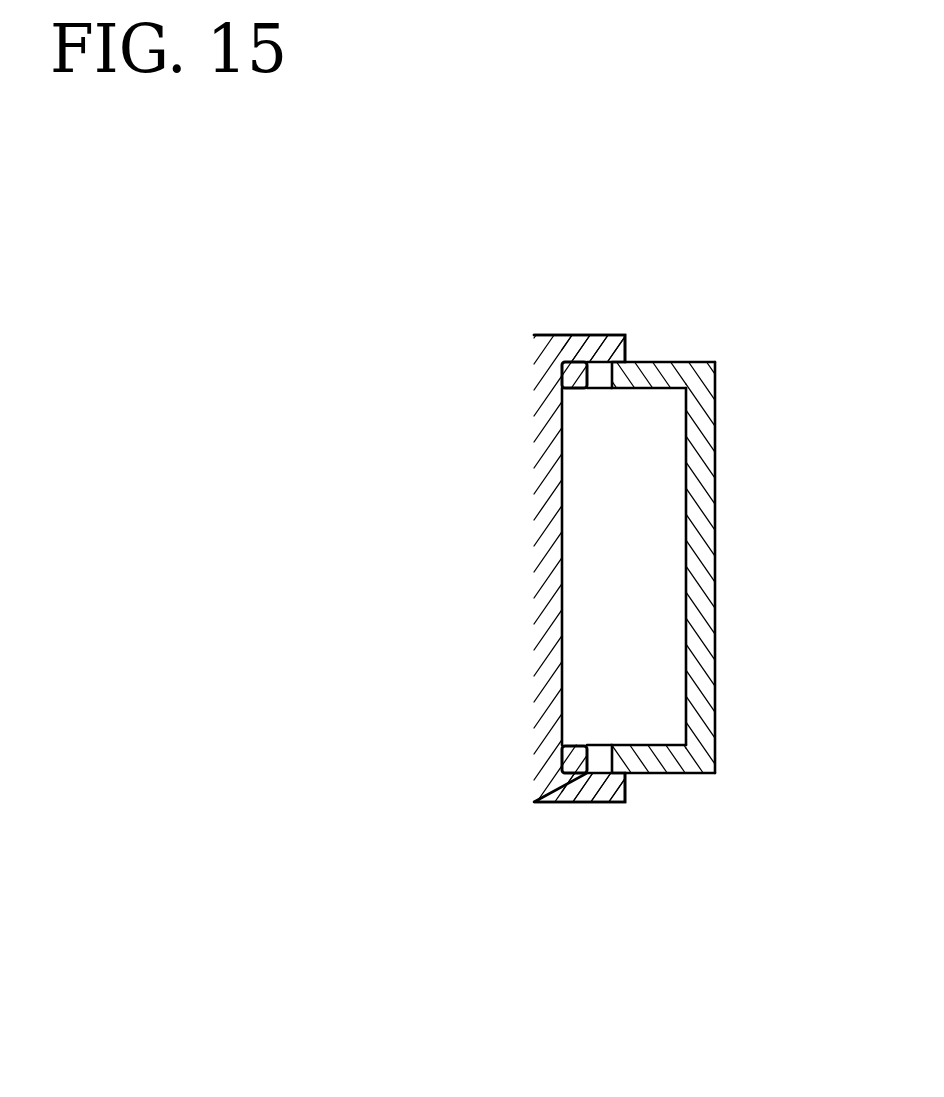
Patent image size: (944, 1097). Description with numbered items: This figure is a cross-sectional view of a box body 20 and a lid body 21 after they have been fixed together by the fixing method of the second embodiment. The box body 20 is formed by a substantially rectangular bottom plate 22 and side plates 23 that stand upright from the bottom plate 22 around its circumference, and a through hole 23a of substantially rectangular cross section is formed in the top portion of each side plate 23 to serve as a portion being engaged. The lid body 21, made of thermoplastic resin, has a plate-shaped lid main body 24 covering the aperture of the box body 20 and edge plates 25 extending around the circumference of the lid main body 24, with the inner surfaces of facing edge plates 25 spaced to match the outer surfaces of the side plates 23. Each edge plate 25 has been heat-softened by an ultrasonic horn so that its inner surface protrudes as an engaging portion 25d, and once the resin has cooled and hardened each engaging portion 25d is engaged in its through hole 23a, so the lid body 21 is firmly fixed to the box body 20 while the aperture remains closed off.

The box body 20 is at (630, 570).
The lid body 21 is at (525, 572).
The bottom plate 22 is at (693, 644).
The side plate 23 is at (653, 368).
The through hole 23a is at (600, 388).
The lid main body 24 is at (543, 408).
The edge plate 25 is at (553, 335).
The engaging portion 25d is at (591, 385).